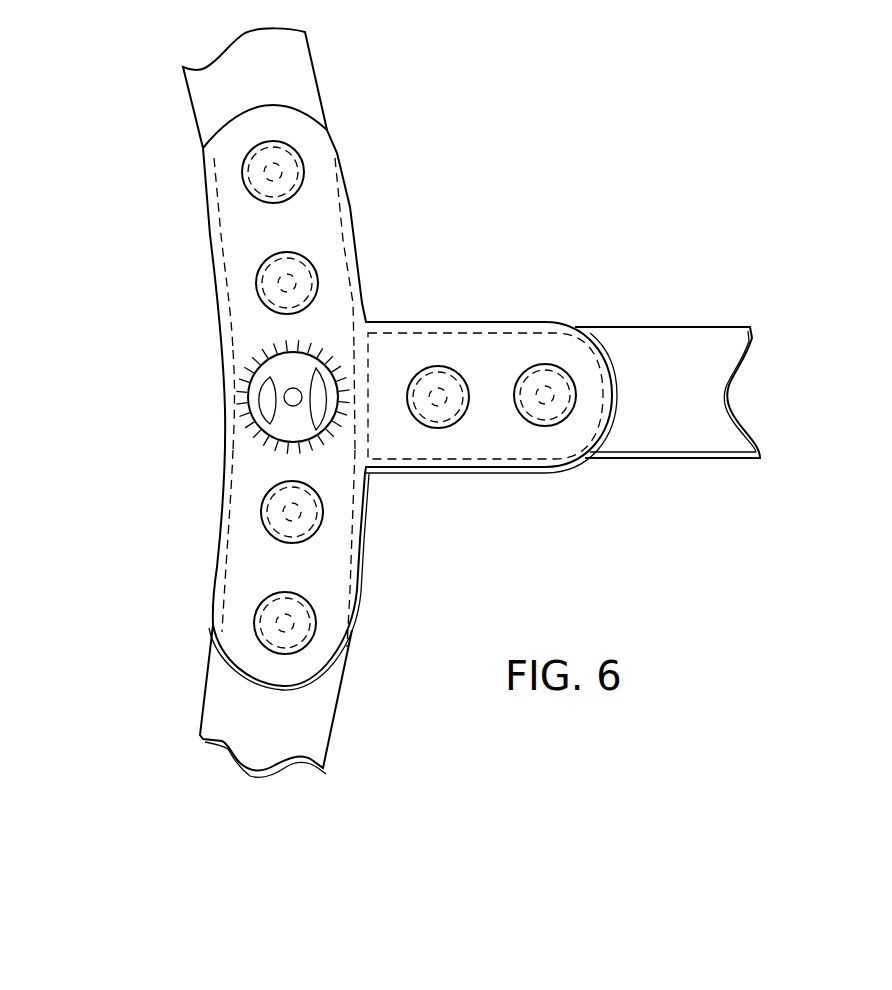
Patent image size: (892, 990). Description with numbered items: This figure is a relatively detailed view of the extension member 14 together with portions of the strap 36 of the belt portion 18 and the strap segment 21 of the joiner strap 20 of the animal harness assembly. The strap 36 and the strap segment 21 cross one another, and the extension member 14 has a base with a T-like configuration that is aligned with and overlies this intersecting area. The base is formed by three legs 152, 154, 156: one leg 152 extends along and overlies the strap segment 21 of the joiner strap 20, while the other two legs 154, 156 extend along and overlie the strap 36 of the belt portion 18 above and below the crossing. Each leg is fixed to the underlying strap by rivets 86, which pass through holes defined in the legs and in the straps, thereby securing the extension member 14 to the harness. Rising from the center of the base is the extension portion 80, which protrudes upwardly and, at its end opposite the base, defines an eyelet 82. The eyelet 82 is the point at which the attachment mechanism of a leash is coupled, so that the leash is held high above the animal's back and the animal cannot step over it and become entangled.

The extension member 14 is at (350, 397).
The belt portion 18 is at (226, 402).
The joiner strap 20 is at (680, 336).
The strap segment 21 is at (660, 345).
The strap 36 is at (293, 77).
The extension portion 80 is at (297, 362).
The eyelet 82 is at (257, 386).
The rivets 86 is at (250, 194).
The leg 152 is at (494, 431).
The leg 154 is at (298, 224).
The leg 156 is at (302, 574).